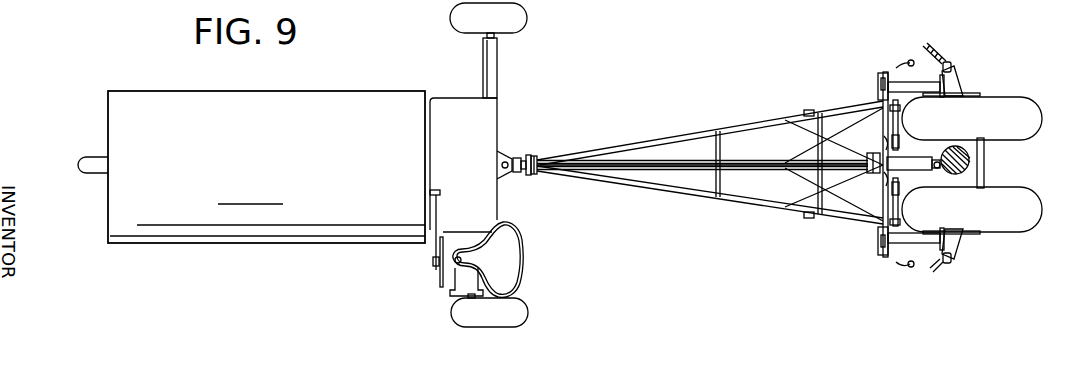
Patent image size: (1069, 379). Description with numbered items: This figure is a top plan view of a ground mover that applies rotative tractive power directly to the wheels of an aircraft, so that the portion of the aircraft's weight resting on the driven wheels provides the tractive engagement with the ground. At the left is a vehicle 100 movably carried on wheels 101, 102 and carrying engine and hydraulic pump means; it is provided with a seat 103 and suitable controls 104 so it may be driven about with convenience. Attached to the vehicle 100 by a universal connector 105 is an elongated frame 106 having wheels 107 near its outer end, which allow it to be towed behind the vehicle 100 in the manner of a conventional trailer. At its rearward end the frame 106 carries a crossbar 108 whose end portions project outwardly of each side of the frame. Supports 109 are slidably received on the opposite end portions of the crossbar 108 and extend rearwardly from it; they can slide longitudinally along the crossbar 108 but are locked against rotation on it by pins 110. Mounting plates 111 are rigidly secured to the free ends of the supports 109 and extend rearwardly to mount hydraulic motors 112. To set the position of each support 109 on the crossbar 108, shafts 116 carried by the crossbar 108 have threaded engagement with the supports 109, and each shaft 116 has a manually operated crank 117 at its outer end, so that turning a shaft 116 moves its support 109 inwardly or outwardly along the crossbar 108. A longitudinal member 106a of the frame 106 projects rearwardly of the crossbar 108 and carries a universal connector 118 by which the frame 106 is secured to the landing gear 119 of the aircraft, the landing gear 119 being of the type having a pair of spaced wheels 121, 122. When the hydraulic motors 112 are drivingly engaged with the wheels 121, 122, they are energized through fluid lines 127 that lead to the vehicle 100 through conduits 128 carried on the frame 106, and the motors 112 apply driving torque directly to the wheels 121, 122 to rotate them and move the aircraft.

The vehicle 100 is at (285, 94).
The wheel 101 is at (92, 170).
The wheel 102 is at (517, 26).
The seat 103 is at (512, 258).
The controls 104 is at (438, 262).
The universal connector 105 is at (519, 158).
The elongated frame 106 is at (710, 126).
The longitudinal member 106a is at (745, 159).
The wheels 107 is at (810, 114).
The crossbar 108 is at (883, 113).
The supports 109 is at (917, 76).
The pins 110 is at (879, 245).
The mounting plates 111 is at (925, 94).
The hydraulic motors 112 is at (957, 86).
The shafts 116 is at (900, 120).
The crank 117 is at (905, 66).
The universal connector 118 is at (947, 151).
The landing gear 119 is at (985, 176).
The wheel 121 is at (1019, 98).
The wheel 122 is at (1010, 229).
The fluid lines 127 is at (937, 54).
The conduits 128 is at (643, 167).